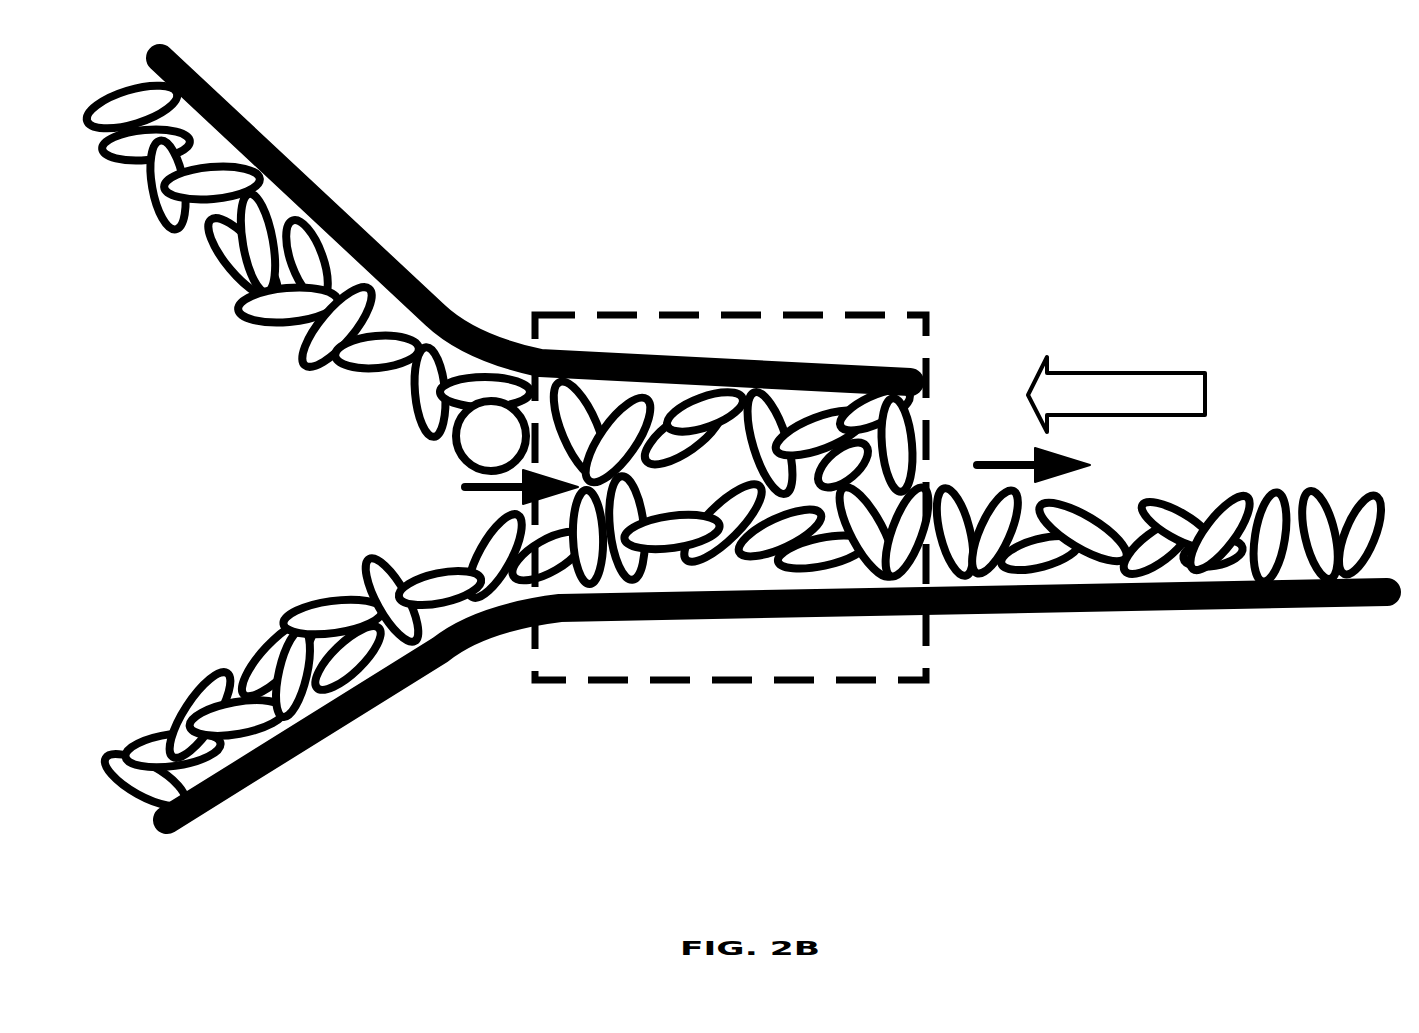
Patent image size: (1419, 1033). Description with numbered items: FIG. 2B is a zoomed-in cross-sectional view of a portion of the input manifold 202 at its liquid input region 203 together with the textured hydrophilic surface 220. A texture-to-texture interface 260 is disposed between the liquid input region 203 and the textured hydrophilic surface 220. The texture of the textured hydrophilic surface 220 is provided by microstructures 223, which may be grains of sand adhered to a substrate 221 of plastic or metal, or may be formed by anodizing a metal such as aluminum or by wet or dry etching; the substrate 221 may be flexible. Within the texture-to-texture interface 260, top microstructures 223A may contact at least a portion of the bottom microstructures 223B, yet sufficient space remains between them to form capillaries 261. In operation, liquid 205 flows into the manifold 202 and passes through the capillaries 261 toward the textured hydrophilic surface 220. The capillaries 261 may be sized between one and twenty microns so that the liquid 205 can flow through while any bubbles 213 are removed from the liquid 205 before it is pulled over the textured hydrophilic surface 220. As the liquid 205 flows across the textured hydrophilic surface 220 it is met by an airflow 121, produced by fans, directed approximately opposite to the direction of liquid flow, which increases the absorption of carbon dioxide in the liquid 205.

The manifold 202 is at (773, 467).
The liquid input region 203 is at (178, 322).
The liquid 205 is at (490, 503).
The bubbles 213 is at (507, 447).
The textured hydrophilic surface 220 is at (1270, 396).
The substrate 221 is at (380, 257).
The microstructures 223 is at (736, 446).
The top microstructures 223A is at (942, 405).
The bottom microstructure 223B is at (668, 572).
The texture-to-texture interface 260 is at (893, 313).
The capillaries 261 is at (699, 455).
The airflow 121 is at (1195, 407).